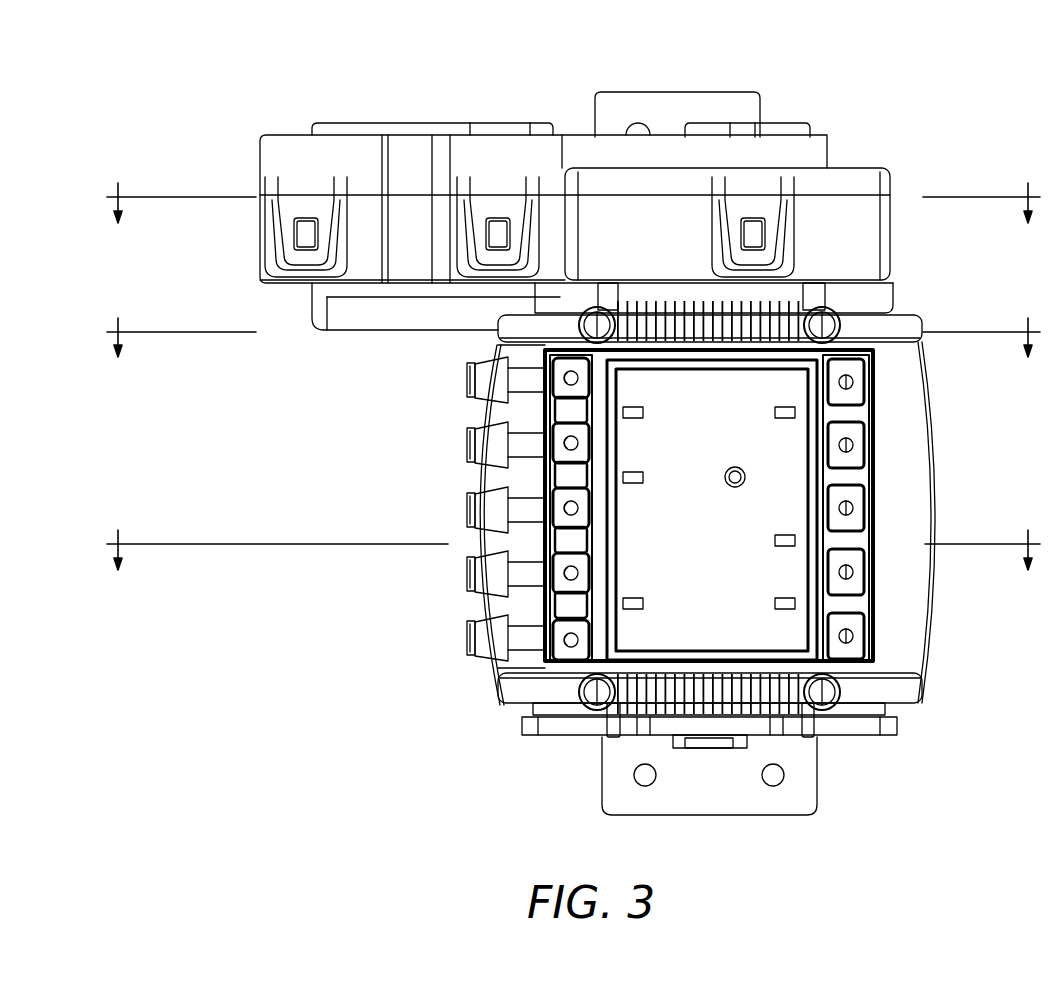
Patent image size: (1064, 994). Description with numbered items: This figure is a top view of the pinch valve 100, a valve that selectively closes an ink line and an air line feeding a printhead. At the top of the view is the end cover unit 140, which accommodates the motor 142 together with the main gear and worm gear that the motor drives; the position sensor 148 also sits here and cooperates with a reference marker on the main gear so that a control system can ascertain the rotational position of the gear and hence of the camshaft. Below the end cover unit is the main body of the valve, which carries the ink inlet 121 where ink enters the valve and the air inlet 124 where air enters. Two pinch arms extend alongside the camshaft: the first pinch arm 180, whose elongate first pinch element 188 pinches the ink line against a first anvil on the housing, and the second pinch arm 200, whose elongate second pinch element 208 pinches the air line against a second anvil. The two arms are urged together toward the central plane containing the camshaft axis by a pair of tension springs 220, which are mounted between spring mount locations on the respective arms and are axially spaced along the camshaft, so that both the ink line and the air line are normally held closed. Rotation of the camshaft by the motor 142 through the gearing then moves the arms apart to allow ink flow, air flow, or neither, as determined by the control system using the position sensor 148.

The pinch valve 100 is at (125, 128).
The end cover unit 140 is at (285, 135).
The motor 142 is at (405, 135).
The position sensor 148 is at (792, 135).
The ink inlet 121 is at (440, 637).
The air inlet 124 is at (855, 638).
The first pinch arm 180 is at (497, 690).
The first pinch element 188 is at (480, 480).
The second pinch arm 200 is at (892, 690).
The second pinch element 208 is at (917, 485).
The spring 220 is at (630, 712).